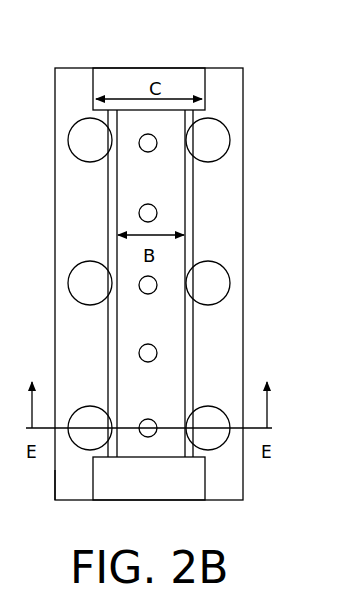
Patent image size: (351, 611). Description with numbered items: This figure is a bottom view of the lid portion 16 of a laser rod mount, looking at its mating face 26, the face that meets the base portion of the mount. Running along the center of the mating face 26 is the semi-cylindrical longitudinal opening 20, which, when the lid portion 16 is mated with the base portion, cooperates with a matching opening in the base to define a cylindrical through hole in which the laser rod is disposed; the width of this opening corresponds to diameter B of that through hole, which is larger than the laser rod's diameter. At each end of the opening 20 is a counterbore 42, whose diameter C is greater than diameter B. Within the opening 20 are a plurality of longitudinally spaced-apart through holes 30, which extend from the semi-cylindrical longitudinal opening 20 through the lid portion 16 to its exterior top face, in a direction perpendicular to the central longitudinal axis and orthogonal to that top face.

The lid portion 16 is at (53, 492).
The semi-cylindrical longitudinal opening 20 is at (165, 195).
The mating face 26 is at (232, 247).
The through holes 30 is at (150, 355).
The counterbores 42 is at (137, 93).